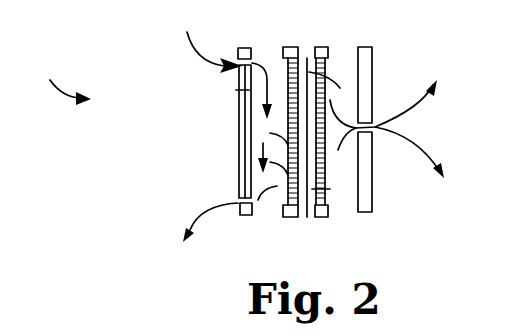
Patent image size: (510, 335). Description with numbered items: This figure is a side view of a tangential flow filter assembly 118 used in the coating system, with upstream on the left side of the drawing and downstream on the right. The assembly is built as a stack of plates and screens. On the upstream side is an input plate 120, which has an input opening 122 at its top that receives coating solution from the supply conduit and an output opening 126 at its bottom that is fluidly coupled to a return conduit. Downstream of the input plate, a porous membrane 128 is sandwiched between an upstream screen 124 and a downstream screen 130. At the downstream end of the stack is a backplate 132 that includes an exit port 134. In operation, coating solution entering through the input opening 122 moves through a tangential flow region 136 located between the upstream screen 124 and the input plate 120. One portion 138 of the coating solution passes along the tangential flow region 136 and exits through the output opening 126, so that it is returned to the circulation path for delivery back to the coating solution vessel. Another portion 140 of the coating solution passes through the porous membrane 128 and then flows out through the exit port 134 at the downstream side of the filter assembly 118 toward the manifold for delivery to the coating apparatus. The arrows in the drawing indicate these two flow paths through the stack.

The filter assembly 118 is at (57, 78).
The input plate 120 is at (240, 123).
The input opening 122 is at (237, 53).
The upstream screen 124 is at (289, 47).
The output opening 126 is at (238, 205).
The porous membrane 128 is at (307, 217).
The downstream screen 130 is at (322, 47).
The backplate 132 is at (371, 56).
The exit port 134 is at (380, 133).
The tangential flow region 136 is at (236, 90).
The portion of coating solution 138 is at (193, 208).
The portion of coating solution 140 is at (330, 189).